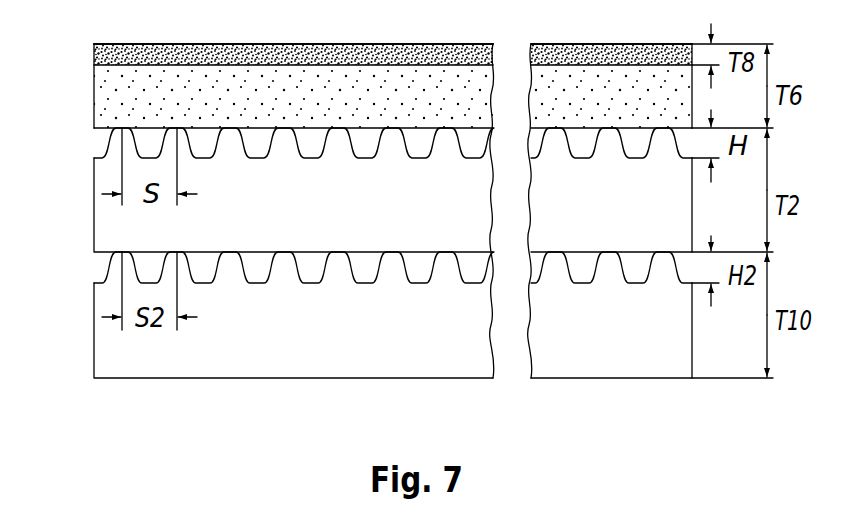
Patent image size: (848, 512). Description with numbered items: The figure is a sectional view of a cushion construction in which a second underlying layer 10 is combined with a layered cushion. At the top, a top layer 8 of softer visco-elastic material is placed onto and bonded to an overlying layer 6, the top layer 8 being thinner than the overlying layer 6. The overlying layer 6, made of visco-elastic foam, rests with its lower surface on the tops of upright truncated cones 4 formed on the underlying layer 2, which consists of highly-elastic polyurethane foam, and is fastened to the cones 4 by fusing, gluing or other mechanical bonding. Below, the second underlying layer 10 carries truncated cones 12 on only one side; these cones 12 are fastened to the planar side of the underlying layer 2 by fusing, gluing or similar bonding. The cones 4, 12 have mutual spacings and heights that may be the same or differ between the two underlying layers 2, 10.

The underlying layer 2 is at (108, 230).
The truncated cones 4 is at (108, 143).
The overlying layer 6 is at (95, 97).
The top layer 8 is at (93, 51).
The second underlying layer 10 is at (97, 345).
The cones 12 is at (108, 268).